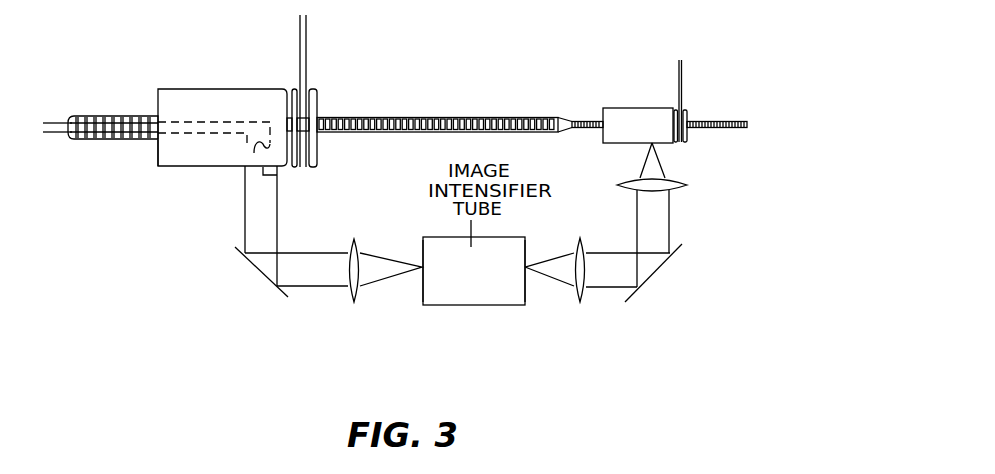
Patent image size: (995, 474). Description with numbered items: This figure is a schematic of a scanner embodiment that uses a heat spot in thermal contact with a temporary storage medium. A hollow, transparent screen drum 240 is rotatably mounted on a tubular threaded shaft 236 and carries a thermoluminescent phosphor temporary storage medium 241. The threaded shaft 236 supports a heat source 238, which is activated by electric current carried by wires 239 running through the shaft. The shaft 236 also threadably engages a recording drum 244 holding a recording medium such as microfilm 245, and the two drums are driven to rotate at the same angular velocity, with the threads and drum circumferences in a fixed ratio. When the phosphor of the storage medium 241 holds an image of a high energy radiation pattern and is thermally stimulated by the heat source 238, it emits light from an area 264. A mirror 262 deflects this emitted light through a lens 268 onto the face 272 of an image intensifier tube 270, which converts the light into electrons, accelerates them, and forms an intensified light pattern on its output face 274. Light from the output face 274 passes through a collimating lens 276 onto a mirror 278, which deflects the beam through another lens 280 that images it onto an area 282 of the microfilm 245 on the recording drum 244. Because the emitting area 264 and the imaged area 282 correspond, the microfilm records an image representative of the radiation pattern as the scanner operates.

The threaded shaft 236 is at (100, 115).
The heat source 238 is at (250, 153).
The wires 239 is at (55, 121).
The screen drum 240 is at (157, 146).
The temporary storage medium 241 is at (191, 88).
The recording drum 244 is at (600, 115).
The microfilm 245 is at (633, 115).
The mirror 262 is at (259, 272).
The area 264 is at (270, 172).
The lens 268 is at (362, 298).
The image intensifier tube 270 is at (470, 300).
The face 272 is at (421, 247).
The output face 274 is at (527, 292).
The collimating lens 276 is at (584, 297).
The mirror 278 is at (673, 259).
The lens 280 is at (677, 189).
The area 282 is at (657, 147).